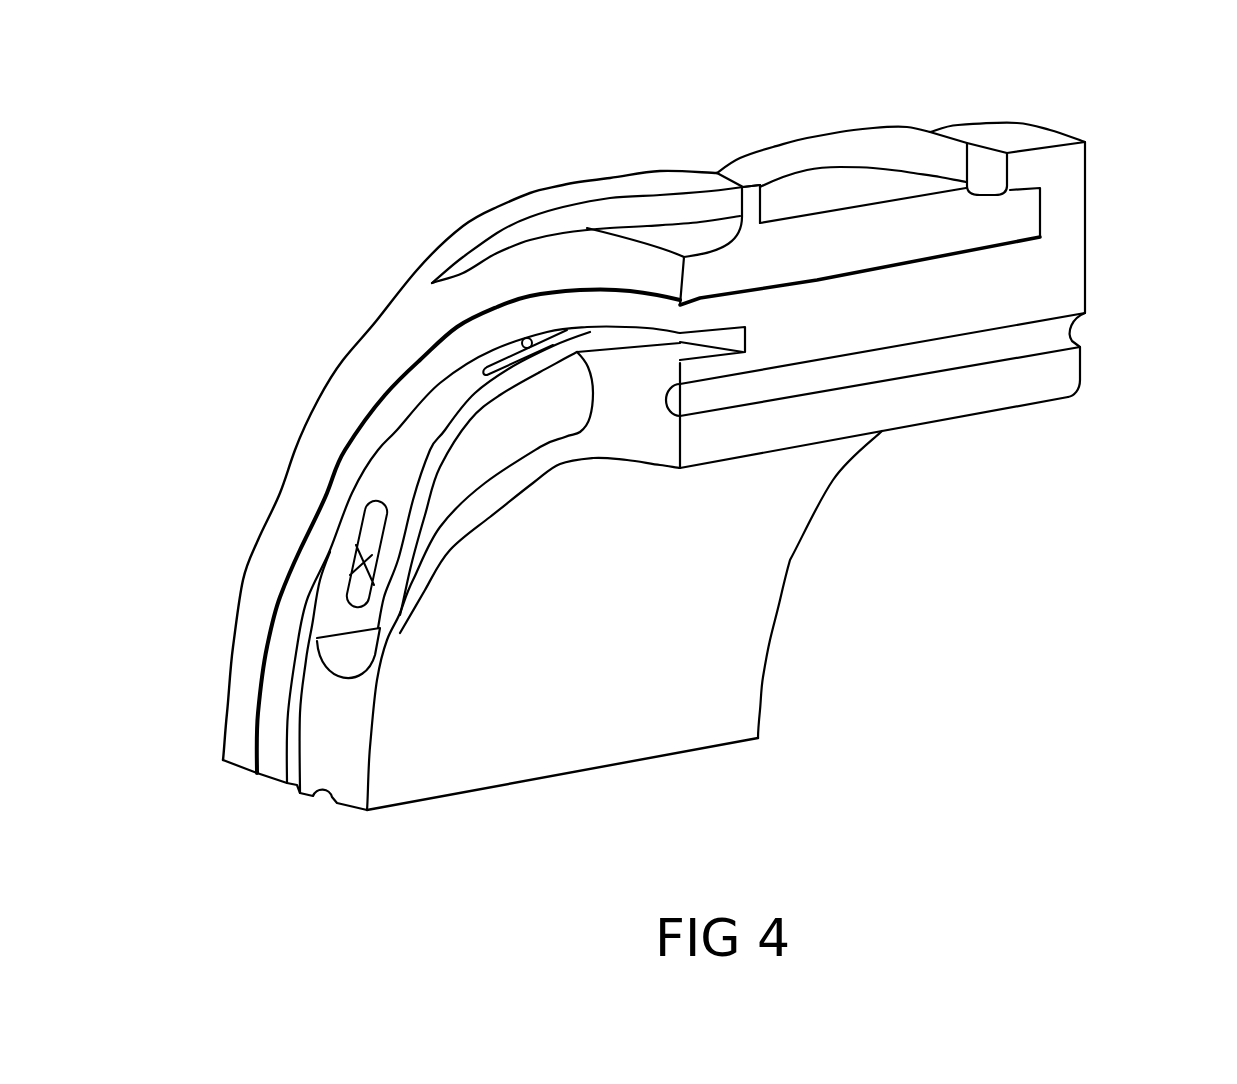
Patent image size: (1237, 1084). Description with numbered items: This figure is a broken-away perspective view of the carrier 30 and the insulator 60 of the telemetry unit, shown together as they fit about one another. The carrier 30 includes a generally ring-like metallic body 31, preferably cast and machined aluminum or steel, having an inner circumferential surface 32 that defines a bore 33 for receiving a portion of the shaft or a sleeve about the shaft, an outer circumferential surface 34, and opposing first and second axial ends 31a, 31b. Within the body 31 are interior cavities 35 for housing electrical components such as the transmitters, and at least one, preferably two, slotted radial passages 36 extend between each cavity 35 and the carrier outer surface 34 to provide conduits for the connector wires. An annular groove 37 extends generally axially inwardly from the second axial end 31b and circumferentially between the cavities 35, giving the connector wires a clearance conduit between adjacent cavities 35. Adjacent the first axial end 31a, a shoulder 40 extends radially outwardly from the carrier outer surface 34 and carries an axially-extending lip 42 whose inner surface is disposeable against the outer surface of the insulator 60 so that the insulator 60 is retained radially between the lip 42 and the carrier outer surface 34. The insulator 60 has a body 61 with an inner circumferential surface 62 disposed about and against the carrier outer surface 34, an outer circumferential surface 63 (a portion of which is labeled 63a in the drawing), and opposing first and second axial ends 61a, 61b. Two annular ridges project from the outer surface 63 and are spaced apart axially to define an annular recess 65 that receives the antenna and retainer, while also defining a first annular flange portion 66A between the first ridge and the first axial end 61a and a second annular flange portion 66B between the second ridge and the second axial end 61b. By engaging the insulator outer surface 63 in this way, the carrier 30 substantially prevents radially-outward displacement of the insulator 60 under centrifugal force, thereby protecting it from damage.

The carrier 30 is at (1130, 219).
The carrier body 31 is at (1086, 252).
The carrier first axial end 31a is at (1087, 296).
The carrier second axial end 31b is at (598, 452).
The inner circumferential surface 32 is at (530, 718).
The bore 33 is at (641, 657).
The outer circumferential surface 34 is at (865, 258).
The interior cavities 35 is at (492, 458).
The radial passages 36 is at (527, 340).
The annular groove 37 is at (660, 345).
The shoulder 40 is at (1078, 172).
The lip 42 is at (1020, 163).
The insulator 60 is at (451, 186).
The insulator body 61 is at (295, 443).
The insulator first axial end 61a is at (1045, 207).
The insulator second axial end 61b is at (355, 378).
The insulator inner circumferential surface 62 is at (934, 264).
The insulator outer circumferential surface 63 is at (787, 195).
The top surface 63a is at (868, 193).
The annular recess 65 is at (808, 158).
The first annular flange portion 66A is at (928, 131).
The second annular flange portion 66B is at (682, 170).